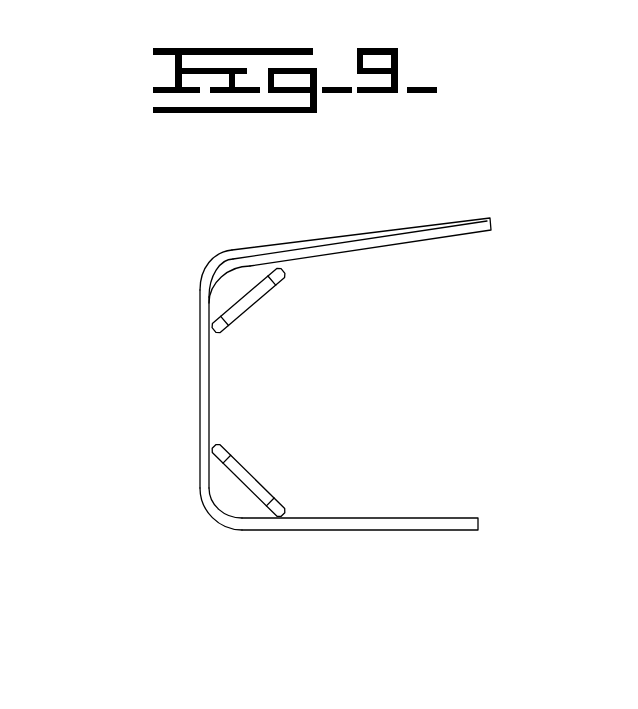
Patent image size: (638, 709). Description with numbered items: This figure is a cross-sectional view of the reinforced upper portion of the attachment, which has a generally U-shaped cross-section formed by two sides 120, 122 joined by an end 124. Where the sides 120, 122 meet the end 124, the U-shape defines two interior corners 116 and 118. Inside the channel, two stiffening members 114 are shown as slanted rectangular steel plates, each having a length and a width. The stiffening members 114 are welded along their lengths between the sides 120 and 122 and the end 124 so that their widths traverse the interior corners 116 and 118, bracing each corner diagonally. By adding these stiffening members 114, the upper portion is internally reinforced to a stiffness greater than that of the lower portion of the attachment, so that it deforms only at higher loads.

The stiffening member 114 is at (247, 303).
The interior corner 116 is at (218, 264).
The interior corner 118 is at (213, 515).
The side 120 is at (373, 231).
The side 122 is at (405, 530).
The end 124 is at (198, 376).